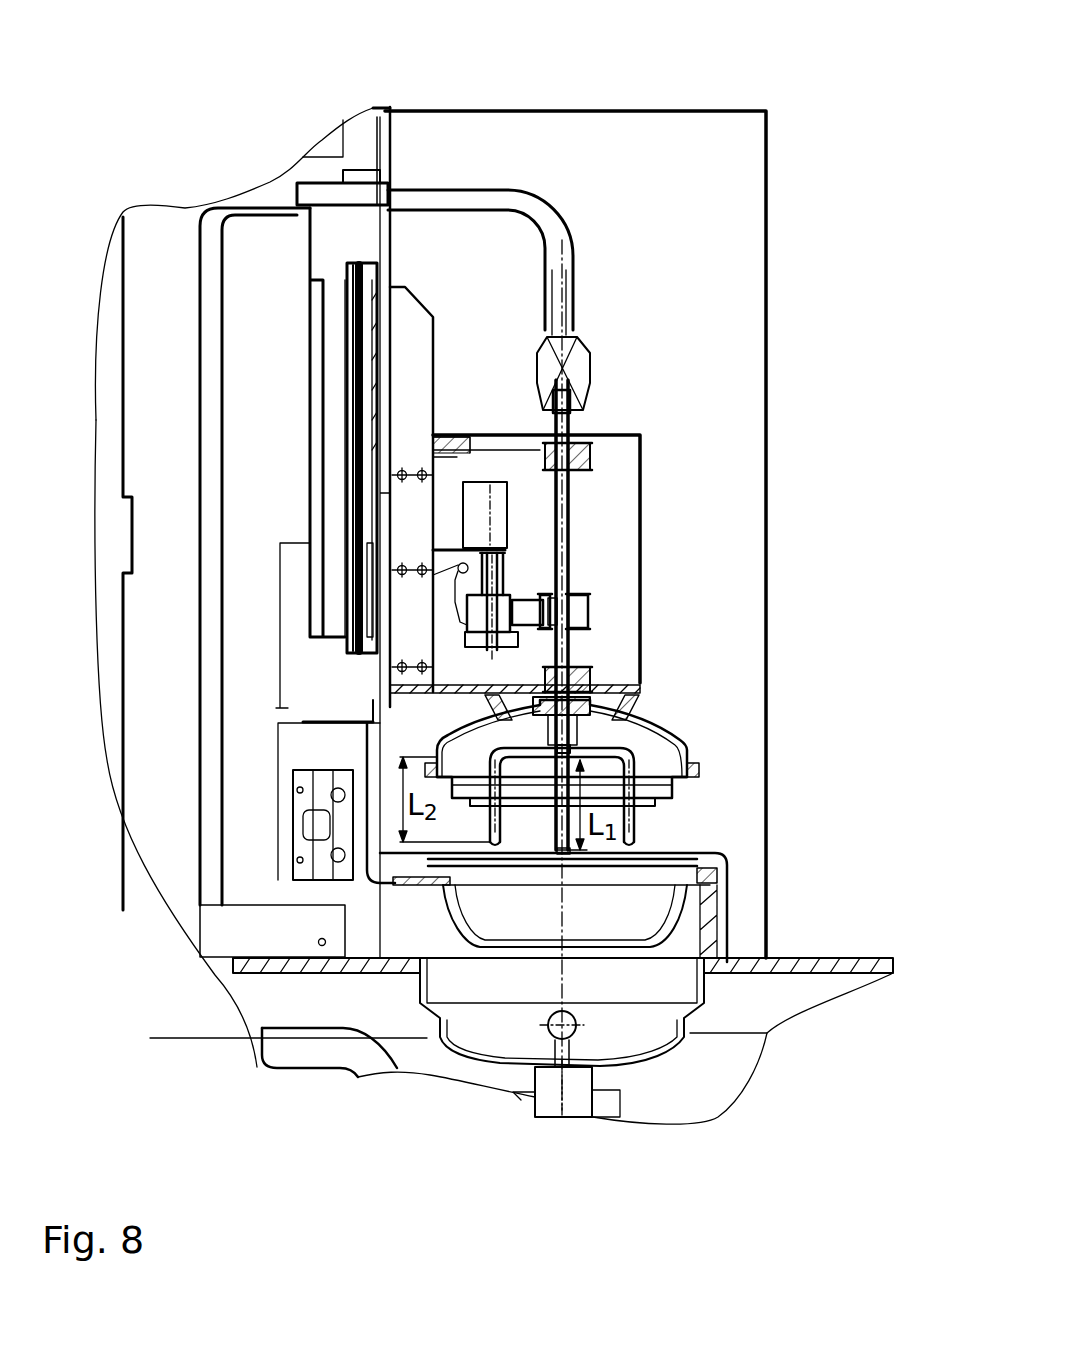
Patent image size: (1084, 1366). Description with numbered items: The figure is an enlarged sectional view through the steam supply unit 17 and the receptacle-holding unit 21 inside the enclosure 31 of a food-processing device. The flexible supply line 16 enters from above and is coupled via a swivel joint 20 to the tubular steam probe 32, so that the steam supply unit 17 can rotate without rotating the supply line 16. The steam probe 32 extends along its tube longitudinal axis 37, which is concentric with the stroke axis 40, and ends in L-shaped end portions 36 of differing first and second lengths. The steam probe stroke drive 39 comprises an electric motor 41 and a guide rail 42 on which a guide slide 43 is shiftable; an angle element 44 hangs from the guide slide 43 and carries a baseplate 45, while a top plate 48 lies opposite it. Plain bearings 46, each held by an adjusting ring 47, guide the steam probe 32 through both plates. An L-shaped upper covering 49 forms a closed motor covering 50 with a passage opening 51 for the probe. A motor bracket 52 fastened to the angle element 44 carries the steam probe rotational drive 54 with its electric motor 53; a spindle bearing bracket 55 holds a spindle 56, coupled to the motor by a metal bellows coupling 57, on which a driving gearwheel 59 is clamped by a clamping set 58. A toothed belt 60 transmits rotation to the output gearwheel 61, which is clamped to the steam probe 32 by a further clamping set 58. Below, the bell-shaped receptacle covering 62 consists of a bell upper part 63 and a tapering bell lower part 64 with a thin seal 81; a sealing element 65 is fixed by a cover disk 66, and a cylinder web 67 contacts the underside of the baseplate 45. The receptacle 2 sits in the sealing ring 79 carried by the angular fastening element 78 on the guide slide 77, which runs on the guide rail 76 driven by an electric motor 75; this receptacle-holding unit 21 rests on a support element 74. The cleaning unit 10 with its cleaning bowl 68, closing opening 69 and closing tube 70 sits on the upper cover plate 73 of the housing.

The receptacle 2 is at (623, 937).
The cleaning unit 10 is at (625, 1070).
The supply line 16 is at (567, 250).
The steam supply unit 17 is at (633, 413).
The swivel joint 20 is at (583, 338).
The receptacle-holding unit 21 is at (292, 800).
The enclosure 31 is at (766, 221).
The steam probe 32 is at (641, 450).
The end portions 36 is at (660, 792).
The tube longitudinal axis 37 is at (572, 483).
The steam probe stroke drive 39 is at (308, 322).
The stroke axis 40 is at (563, 617).
The electric motor 41 is at (308, 262).
The guide rail 42 is at (327, 420).
The guide slide 43 is at (372, 268).
The angle element 44 is at (398, 283).
The baseplate 45 is at (592, 684).
The plain bearing 46 is at (589, 450).
The adjusting ring 47 is at (596, 458).
The top plate 48 is at (520, 600).
The upper covering 49 is at (467, 432).
The motor covering 50 is at (647, 433).
The passage opening 51 is at (592, 378).
The motor bracket 52 is at (432, 549).
The electric motor 53 is at (480, 455).
The steam probe rotational drive 54 is at (463, 494).
The spindle bearing bracket 55 is at (456, 572).
The spindle 56 is at (488, 698).
The metal bellows coupling 57 is at (480, 556).
The clamping set 58 is at (465, 640).
The driving gearwheel 59 is at (466, 606).
The toothed belt 60 is at (546, 200).
The output gearwheel 61 is at (589, 612).
The receptacle covering 62 is at (690, 742).
The bell upper part 63 is at (641, 716).
The bell lower part 64 is at (700, 783).
The sealing element 65 is at (683, 740).
The cover disk 66 is at (605, 700).
The cylinder web 67 is at (372, 708).
The cleaning bowl 68 is at (660, 1053).
The closing opening 69 is at (262, 1040).
The closing tube 70 is at (553, 1100).
The upper cover plate 73 is at (830, 965).
The support element 74 is at (717, 925).
The electric motor 75 is at (382, 690).
The guide rail 76 is at (372, 846).
The guide slide 77 is at (375, 876).
The angular fastening element 78 is at (375, 905).
The sealing ring 79 is at (717, 878).
The seal 81 is at (637, 822).